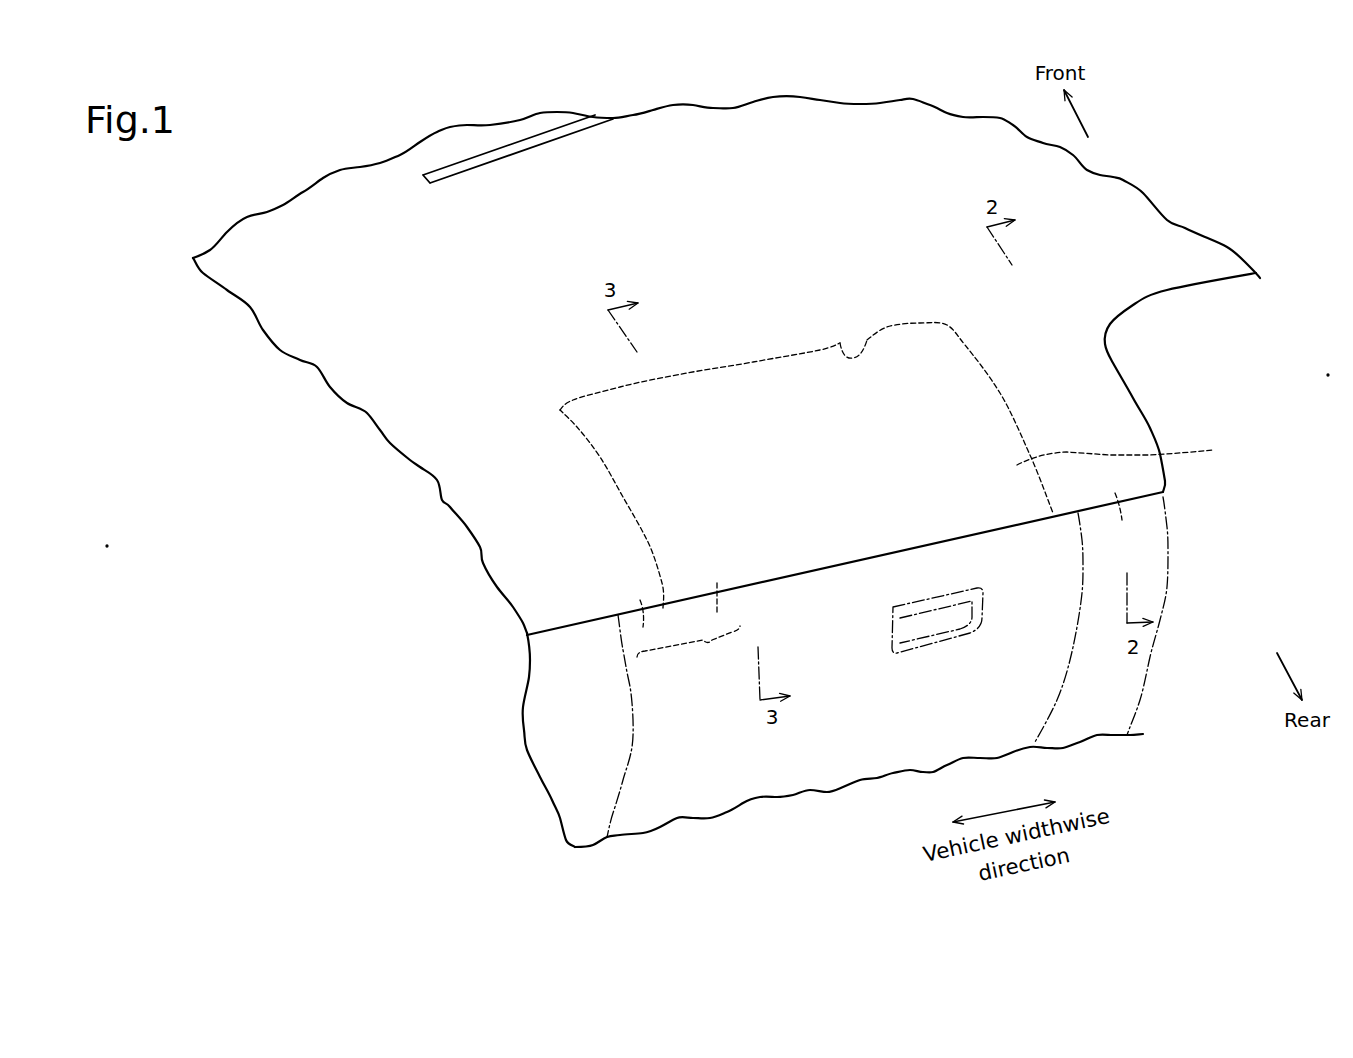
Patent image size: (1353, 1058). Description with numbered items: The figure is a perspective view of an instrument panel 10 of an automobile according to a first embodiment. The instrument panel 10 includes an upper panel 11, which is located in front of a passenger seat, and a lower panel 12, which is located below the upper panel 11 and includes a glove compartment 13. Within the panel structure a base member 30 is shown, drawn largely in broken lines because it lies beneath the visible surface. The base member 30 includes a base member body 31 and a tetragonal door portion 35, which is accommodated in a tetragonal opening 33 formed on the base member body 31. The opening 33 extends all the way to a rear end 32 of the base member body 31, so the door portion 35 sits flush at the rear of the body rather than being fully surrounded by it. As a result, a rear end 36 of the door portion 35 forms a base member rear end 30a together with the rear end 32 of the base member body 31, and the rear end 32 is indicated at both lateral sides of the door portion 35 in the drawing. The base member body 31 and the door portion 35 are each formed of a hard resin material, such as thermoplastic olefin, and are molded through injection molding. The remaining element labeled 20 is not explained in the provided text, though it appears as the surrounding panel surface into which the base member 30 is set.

The instrument panel 10 is at (333, 495).
The upper panel 11 is at (414, 471).
The lower panel 12 is at (517, 722).
The glove compartment 13 is at (870, 767).
The roof panel 20 is at (1133, 210).
The base member 30 is at (1237, 383).
The base member body 31 is at (1110, 398).
The door portion 35 is at (1130, 451).
The rear end of the base member body 32 is at (885, 574).
The opening 33 is at (867, 340).
The rear end of the door portion 36 is at (716, 611).
The base member rear end 30a is at (688, 655).